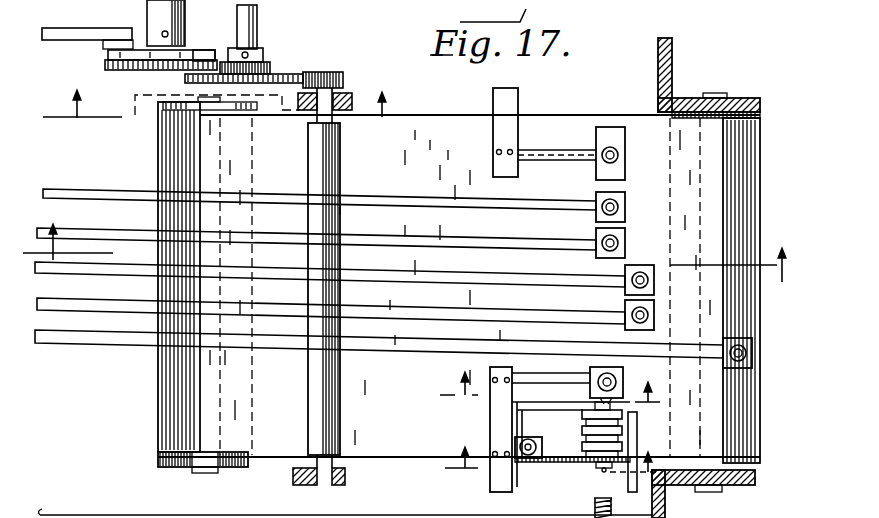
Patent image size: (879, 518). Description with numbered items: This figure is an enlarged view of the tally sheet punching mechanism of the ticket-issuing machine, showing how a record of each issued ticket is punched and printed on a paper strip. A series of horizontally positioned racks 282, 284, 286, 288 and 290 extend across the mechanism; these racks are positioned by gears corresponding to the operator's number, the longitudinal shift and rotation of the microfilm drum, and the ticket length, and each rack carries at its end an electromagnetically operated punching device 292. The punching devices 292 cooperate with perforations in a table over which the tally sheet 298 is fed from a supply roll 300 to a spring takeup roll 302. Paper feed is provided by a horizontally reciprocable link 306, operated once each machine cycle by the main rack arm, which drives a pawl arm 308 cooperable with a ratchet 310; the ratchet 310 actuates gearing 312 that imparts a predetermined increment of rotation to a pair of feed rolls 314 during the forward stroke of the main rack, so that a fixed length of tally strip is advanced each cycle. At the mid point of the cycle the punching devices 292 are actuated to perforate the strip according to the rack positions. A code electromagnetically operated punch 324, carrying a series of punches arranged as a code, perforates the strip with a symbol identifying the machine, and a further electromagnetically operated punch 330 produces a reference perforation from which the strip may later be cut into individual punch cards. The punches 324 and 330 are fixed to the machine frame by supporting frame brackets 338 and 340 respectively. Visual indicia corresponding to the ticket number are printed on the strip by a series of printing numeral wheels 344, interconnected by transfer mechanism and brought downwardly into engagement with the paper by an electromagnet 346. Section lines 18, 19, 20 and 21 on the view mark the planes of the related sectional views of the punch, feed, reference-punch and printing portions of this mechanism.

The rack 282 is at (88, 190).
The rack 284 is at (98, 515).
The rack 286 is at (108, 262).
The rack 288 is at (98, 299).
The rack 290 is at (100, 331).
The electromagnetically operated punching devices 292 is at (622, 243).
The tally sheet 298 is at (377, 446).
The supply roll 300 is at (232, 468).
The spring takeup roll 302 is at (756, 472).
The horizontally reciprocable link 306 is at (52, 28).
The pawl arm 308 is at (107, 50).
The ratchet 310 is at (200, 50).
The gearing 312 is at (273, 71).
The feed rolls 314 is at (372, 381).
The code electromagnetically operated punch 324 is at (610, 130).
The electromagnetically operated punch 330 is at (623, 374).
The supporting frame bracket 338 is at (500, 100).
The supporting frame bracket 340 is at (500, 429).
The printing numeral wheels 344 is at (584, 426).
The electromagnet 346 is at (532, 460).
The section line 18 is at (800, 297).
The section line 19 is at (392, 148).
The section line 20 is at (551, 403).
The section line 21 is at (552, 481).